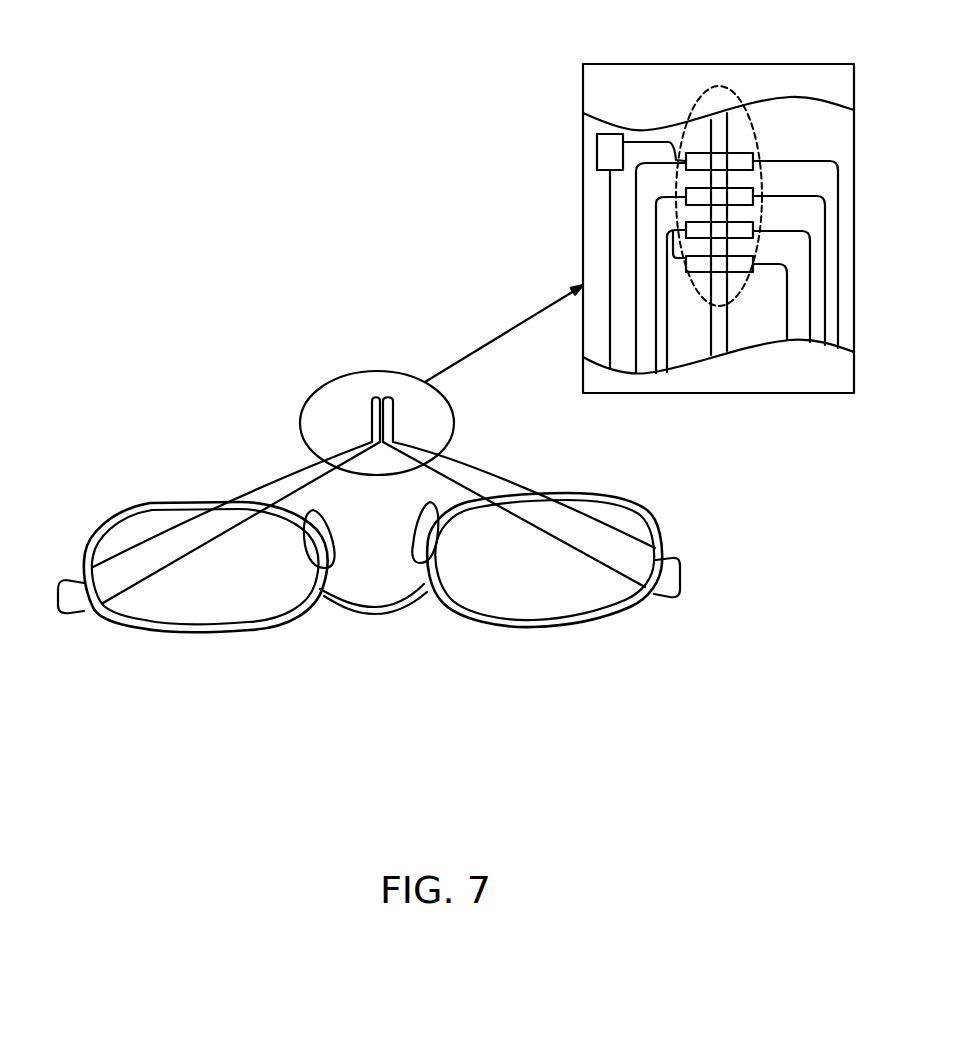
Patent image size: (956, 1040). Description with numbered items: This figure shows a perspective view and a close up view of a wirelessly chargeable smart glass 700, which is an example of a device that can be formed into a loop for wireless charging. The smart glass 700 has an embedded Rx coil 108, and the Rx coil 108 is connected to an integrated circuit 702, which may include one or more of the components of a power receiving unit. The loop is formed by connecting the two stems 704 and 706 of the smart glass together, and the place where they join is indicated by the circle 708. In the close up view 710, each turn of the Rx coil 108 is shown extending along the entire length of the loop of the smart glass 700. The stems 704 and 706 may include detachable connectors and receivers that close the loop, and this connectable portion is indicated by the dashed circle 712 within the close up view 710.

The wirelessly chargeable smart glass 700 is at (456, 851).
The integrated circuit 702 is at (597, 142).
The stem 704 is at (267, 482).
The stem 706 is at (478, 474).
The circle 708 is at (330, 385).
The close up view 710 is at (760, 64).
The dashed circle 712 is at (710, 86).
The Rx coil 108 is at (840, 330).